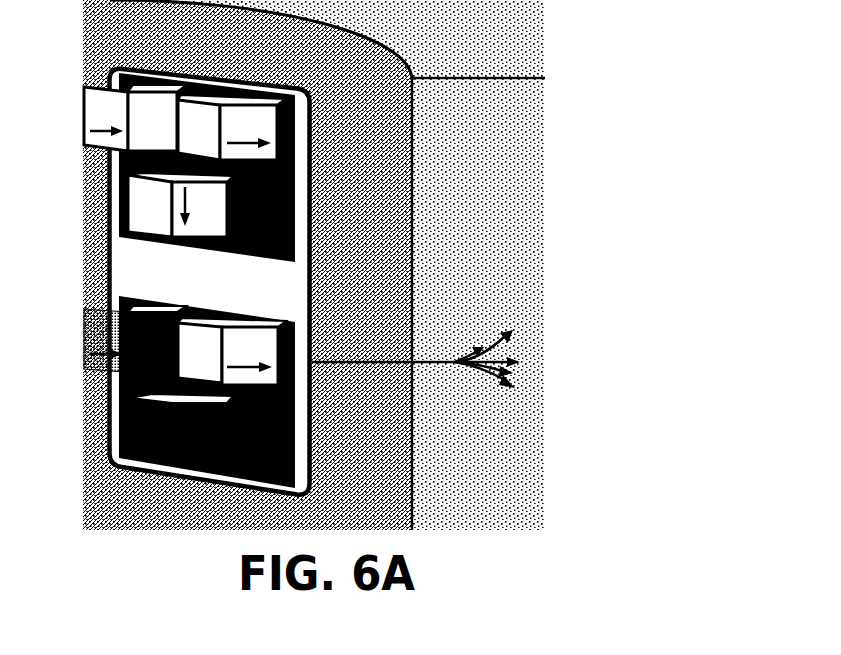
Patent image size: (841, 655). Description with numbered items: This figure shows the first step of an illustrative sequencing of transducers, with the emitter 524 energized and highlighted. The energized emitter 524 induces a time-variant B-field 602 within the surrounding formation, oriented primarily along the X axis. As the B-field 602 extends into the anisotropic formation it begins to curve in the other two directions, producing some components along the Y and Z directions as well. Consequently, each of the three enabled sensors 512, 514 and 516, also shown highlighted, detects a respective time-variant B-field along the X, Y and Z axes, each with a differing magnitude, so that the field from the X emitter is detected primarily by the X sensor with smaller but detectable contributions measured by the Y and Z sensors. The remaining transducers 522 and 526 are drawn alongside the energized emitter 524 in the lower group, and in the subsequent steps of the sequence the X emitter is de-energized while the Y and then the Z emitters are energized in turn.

The sensor 512 is at (156, 122).
The sensor 514 is at (195, 127).
The sensor 516 is at (158, 221).
The first gyroscope (Y-axis) 522 is at (157, 345).
The emitter 524 is at (195, 345).
The third gyroscope (Z-axis) 526 is at (142, 430).
The B-field 602 is at (422, 360).